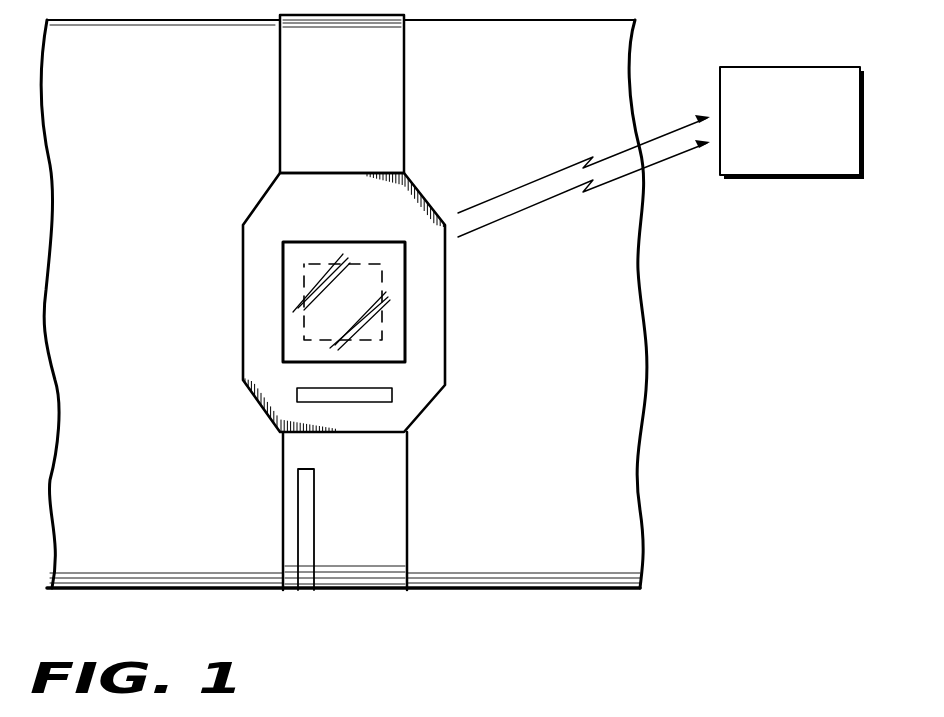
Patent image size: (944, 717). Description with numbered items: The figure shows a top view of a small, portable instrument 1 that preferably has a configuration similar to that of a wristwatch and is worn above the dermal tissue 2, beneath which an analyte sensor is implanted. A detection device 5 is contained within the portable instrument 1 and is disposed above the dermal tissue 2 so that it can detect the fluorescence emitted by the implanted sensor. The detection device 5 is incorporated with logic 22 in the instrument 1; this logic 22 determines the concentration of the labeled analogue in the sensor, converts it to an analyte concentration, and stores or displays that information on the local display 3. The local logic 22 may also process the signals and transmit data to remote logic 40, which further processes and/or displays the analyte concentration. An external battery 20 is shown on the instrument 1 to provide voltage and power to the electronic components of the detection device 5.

The portable instrument 1 is at (486, 313).
The dermal tissue 2 is at (146, 157).
The display 3 is at (290, 262).
The detection device 5 is at (304, 320).
The external battery 20 is at (308, 519).
The logic 22 is at (392, 395).
The remote logic 40 is at (796, 66).